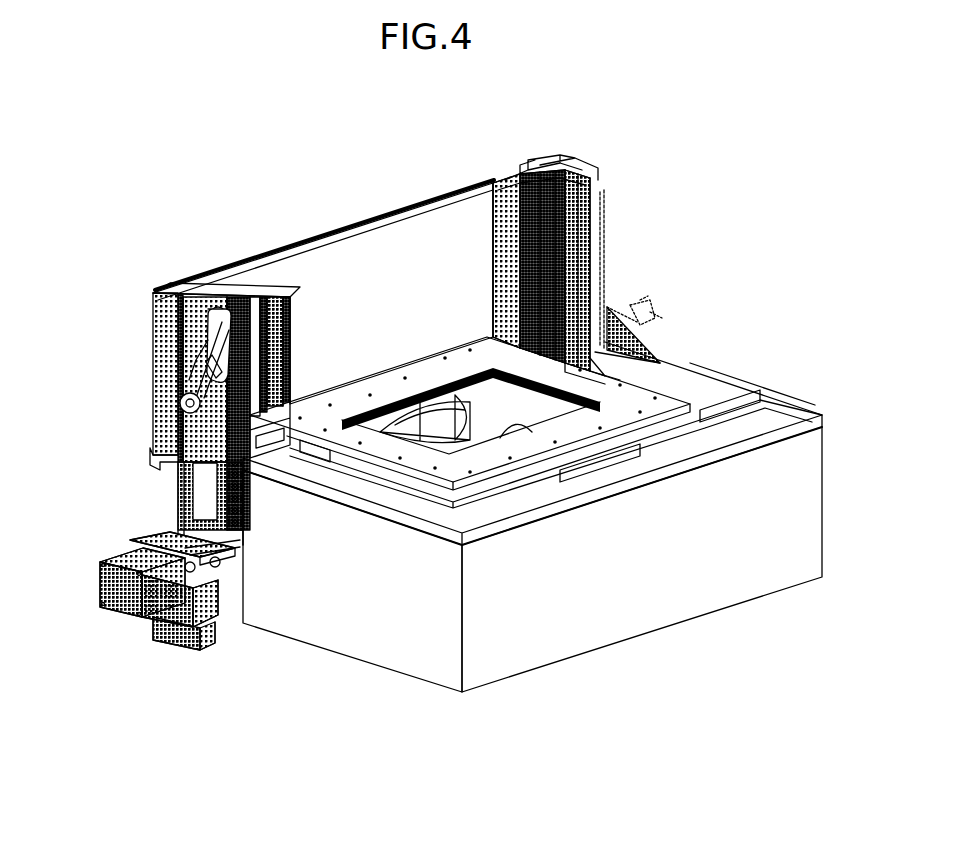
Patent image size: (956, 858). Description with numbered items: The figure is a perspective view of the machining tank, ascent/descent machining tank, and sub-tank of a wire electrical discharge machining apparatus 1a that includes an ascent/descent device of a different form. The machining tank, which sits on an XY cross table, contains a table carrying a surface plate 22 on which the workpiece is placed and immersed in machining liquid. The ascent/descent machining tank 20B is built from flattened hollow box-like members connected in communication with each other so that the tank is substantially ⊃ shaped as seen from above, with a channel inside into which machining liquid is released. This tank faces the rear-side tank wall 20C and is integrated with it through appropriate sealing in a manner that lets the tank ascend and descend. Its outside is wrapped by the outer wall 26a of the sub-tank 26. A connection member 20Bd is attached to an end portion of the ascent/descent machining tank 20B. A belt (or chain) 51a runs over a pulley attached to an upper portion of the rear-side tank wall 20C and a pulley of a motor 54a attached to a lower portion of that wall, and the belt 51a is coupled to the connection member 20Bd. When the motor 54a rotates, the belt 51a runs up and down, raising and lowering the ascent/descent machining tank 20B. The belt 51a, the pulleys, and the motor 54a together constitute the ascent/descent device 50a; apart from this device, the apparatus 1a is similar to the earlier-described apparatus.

The wire electrical discharge machining apparatus 1a is at (555, 133).
The rear-side tank wall 20C is at (378, 222).
The ascent/descent machining tank 20B is at (780, 430).
The connection member 20Bd is at (245, 527).
The surface plate 22 is at (635, 395).
The sub-tank 26 is at (723, 577).
The outer wall 26a is at (350, 627).
The ascent/descent device 50a is at (138, 520).
The belt 51a is at (175, 486).
The motor 54a is at (113, 585).